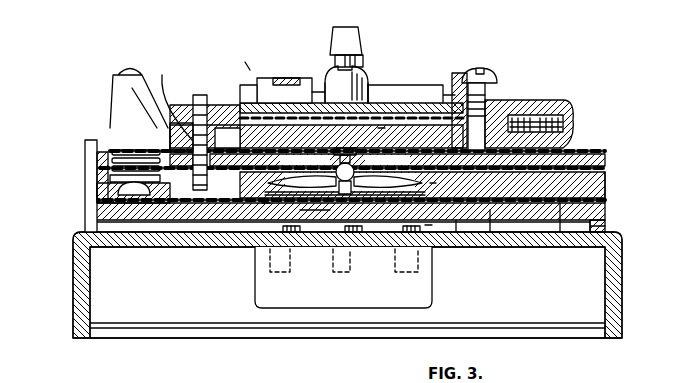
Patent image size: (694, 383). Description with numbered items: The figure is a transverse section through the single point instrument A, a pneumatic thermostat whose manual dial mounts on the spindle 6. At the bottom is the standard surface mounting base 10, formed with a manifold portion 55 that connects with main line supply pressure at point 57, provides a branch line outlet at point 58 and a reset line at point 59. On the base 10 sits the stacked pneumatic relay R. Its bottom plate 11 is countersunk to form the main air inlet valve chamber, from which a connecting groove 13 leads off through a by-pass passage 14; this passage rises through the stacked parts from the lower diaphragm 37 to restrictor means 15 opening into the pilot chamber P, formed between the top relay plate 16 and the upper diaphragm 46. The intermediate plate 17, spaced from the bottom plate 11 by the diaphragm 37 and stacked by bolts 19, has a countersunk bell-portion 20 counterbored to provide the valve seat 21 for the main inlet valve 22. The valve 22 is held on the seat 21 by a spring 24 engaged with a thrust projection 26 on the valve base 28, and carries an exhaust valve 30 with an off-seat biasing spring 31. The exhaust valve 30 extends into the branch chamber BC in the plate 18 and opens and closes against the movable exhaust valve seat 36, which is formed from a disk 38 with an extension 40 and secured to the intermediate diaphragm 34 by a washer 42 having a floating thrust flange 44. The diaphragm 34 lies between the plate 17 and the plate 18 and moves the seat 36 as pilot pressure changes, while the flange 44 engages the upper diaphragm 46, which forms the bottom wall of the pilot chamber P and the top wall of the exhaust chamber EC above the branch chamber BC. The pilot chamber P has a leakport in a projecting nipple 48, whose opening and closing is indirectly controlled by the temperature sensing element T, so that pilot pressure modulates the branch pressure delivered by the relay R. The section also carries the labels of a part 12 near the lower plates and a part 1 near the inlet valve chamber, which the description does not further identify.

The spindle 6 is at (352, 38).
The surface mounting base 10 is at (80, 306).
The bottom plate 11 is at (90, 217).
The terminal 12 is at (460, 220).
The connecting groove 13 is at (493, 210).
The by-pass passage 14 is at (562, 133).
The restrictor means 15 is at (510, 113).
The top relay plate 16 is at (572, 104).
The intermediate plate 17 is at (604, 191).
The plate 18 is at (118, 170).
The bolts 19 is at (152, 78).
The bell-portion 20 is at (276, 184).
The valve seat 21 is at (417, 128).
The main inlet valve 22 is at (323, 215).
The spring 24 is at (388, 218).
The thrust projection 26 is at (338, 222).
The base of the valve 28 is at (393, 128).
The exhaust valve 30 is at (380, 128).
The off-seat biasing spring 31 is at (395, 222).
The intermediate diaphragm 34 is at (262, 130).
The exhaust valve seat 36 is at (340, 150).
The lower diaphragm 37 is at (566, 204).
The disk 38 is at (275, 140).
The extension 40 is at (325, 150).
The washer 42 is at (305, 150).
The thrust flange 44 is at (248, 168).
The upper diaphragm 46 is at (205, 120).
The projecting nipple 48 is at (145, 92).
The manifold portion 55 is at (405, 310).
The main line supply pressure point 57 is at (338, 273).
The branch line outlet point 58 is at (268, 272).
The reset line point 59 is at (426, 274).
The single point instrument A is at (575, 96).
The pilot chamber P is at (262, 150).
The pneumatic relay R is at (355, 150).
The temperature sensing element T is at (112, 140).
The exhaust chamber EC is at (444, 190).
The branch chamber BC is at (428, 225).
The terminal 1 is at (265, 203).